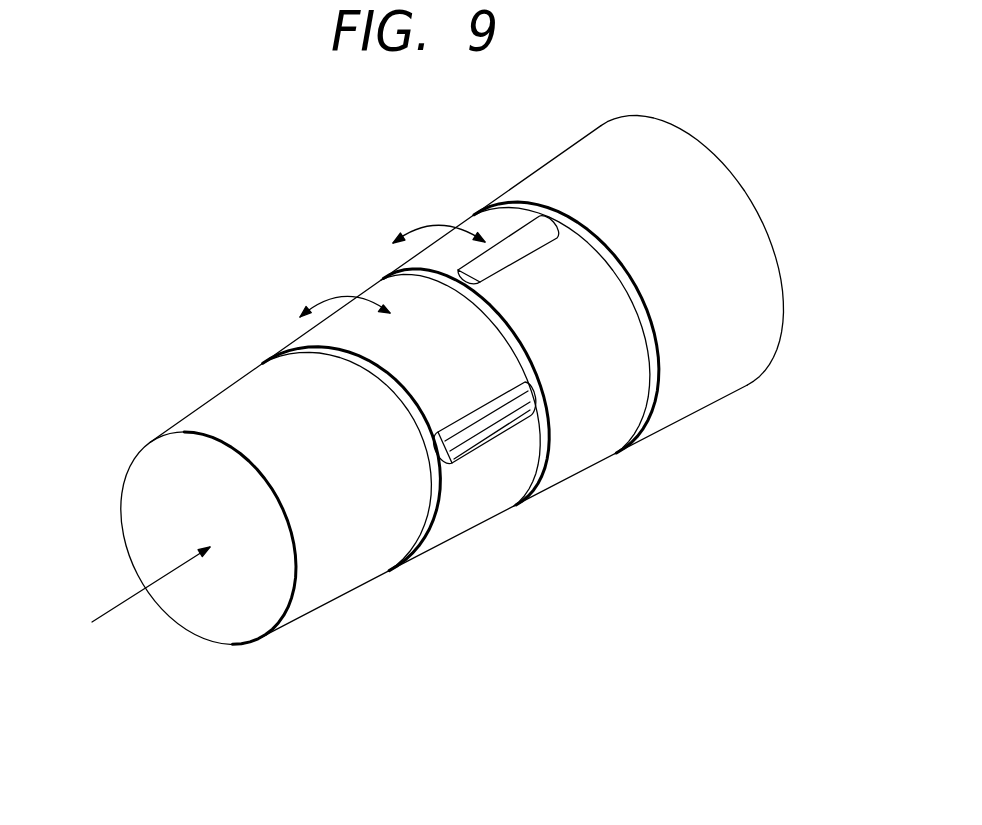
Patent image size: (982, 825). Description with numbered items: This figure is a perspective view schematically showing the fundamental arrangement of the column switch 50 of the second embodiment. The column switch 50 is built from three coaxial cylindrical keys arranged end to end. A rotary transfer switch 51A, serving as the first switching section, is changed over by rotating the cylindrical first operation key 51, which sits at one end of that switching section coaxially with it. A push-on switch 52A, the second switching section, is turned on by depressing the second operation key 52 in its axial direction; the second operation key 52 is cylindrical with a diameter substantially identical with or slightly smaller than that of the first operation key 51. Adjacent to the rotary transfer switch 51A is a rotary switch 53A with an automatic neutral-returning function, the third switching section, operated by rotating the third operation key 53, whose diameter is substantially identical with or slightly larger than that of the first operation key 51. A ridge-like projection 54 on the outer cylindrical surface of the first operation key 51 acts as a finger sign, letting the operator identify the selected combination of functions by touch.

The column switch 50 is at (643, 650).
The first operation key 51 is at (450, 530).
The second operation key 52 is at (353, 577).
The third operation key 53 is at (565, 458).
The ridge-like projection 54 is at (457, 460).
The rotary transfer switch 51A is at (342, 296).
The push-on switch 52A is at (103, 614).
The rotary switch 53A is at (440, 228).